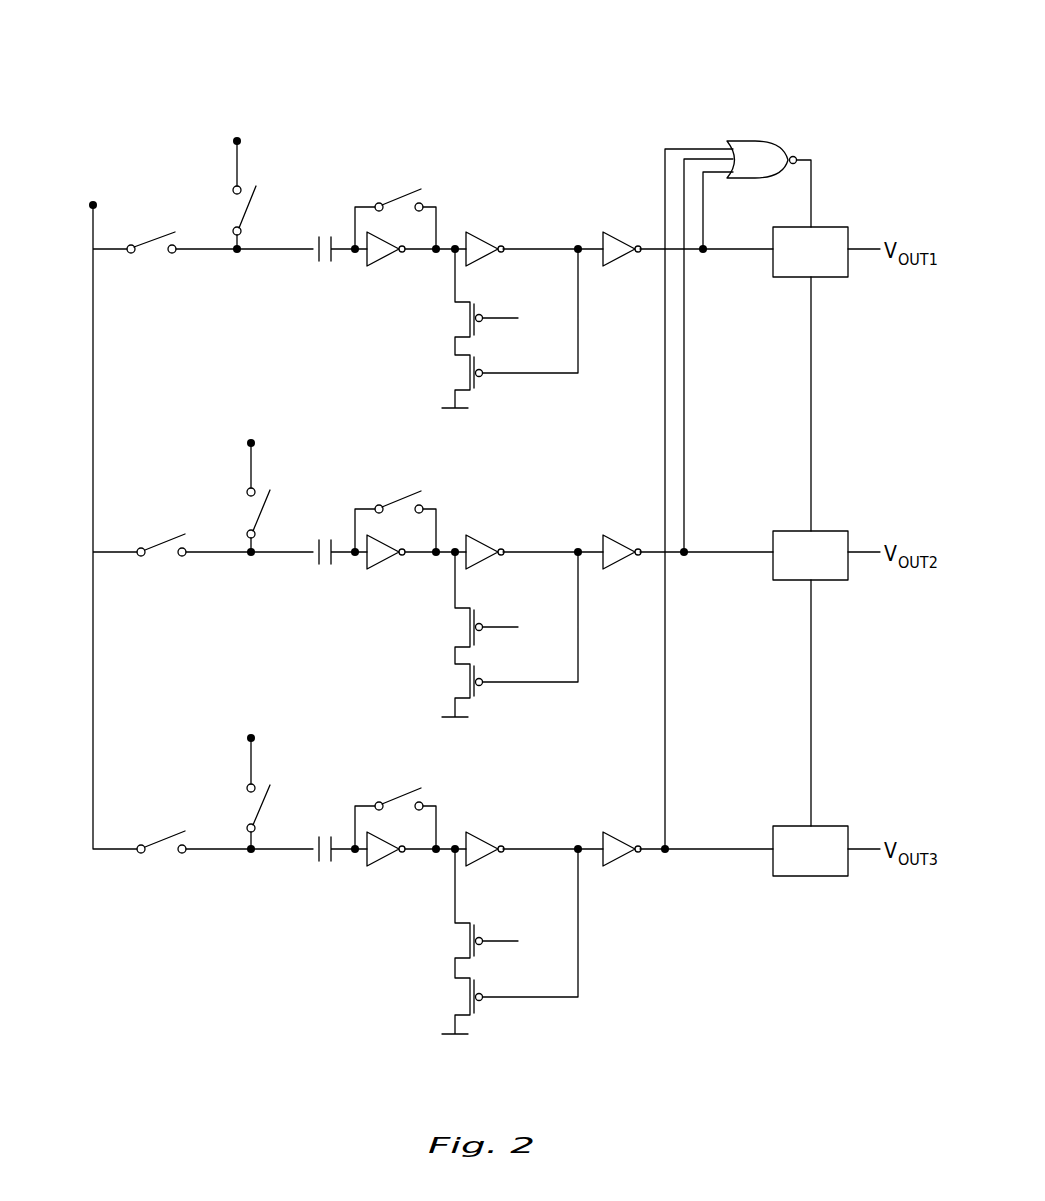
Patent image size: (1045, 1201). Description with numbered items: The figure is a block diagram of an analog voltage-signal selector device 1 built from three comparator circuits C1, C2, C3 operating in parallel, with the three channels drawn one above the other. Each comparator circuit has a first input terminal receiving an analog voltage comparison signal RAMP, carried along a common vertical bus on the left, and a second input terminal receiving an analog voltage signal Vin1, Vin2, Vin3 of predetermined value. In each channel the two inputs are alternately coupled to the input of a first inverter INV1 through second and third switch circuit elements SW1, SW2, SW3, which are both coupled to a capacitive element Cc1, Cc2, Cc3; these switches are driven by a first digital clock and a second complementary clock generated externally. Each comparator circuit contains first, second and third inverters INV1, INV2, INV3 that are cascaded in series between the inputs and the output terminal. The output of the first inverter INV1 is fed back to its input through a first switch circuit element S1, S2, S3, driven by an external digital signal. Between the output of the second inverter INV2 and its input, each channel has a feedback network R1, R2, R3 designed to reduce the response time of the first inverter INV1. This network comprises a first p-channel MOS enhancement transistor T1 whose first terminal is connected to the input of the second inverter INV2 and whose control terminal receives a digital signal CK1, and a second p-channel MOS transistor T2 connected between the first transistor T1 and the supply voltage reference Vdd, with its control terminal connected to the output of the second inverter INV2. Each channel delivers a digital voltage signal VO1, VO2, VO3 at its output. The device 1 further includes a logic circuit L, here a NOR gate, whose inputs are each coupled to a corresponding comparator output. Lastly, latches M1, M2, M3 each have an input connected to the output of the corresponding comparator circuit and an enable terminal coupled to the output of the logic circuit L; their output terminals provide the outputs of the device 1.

The analog voltage-signal selector device 1 is at (559, 60).
The analog voltage comparison signal RAMP is at (105, 510).
The second and third switch circuit elements SW1 is at (282, 212).
The second and third switch circuit elements SW2 is at (225, 510).
The second and third switch circuit elements SW3 is at (225, 806).
The analog voltage signal Vin1 is at (237, 123).
The analog voltage signal Vin2 is at (251, 425).
The analog voltage signal Vin3 is at (251, 720).
The capacitive element Cc1 is at (339, 262).
The capacitive element Cc2 is at (338, 534).
The capacitive element Cc3 is at (338, 831).
The first switch circuit element S1 is at (401, 168).
The first switch circuit element S2 is at (395, 513).
The first switch circuit element S3 is at (395, 810).
The first inverter INV1 is at (389, 560).
The second inverter INV2 is at (497, 576).
The third inverter INV3 is at (632, 576).
The comparator circuit C1 is at (502, 213).
The comparator circuit C2 is at (509, 518).
The comparator circuit C3 is at (508, 810).
The feedback network R1 is at (536, 383).
The feedback network R2 is at (536, 690).
The feedback network R3 is at (534, 1005).
The first p-channel MOS enhancement transistor T1 is at (443, 630).
The second p-channel MOS transistor T2 is at (443, 686).
The digital signal CK1 is at (538, 630).
The supply voltage reference Vdd is at (453, 741).
The digital voltage signal VO1 is at (722, 212).
The digital voltage signal VO2 is at (706, 357).
The digital voltage signal VO3 is at (697, 501).
The latch M1 is at (826, 252).
The latch M2 is at (826, 555).
The latch M3 is at (826, 851).
The logic circuit L is at (769, 483).